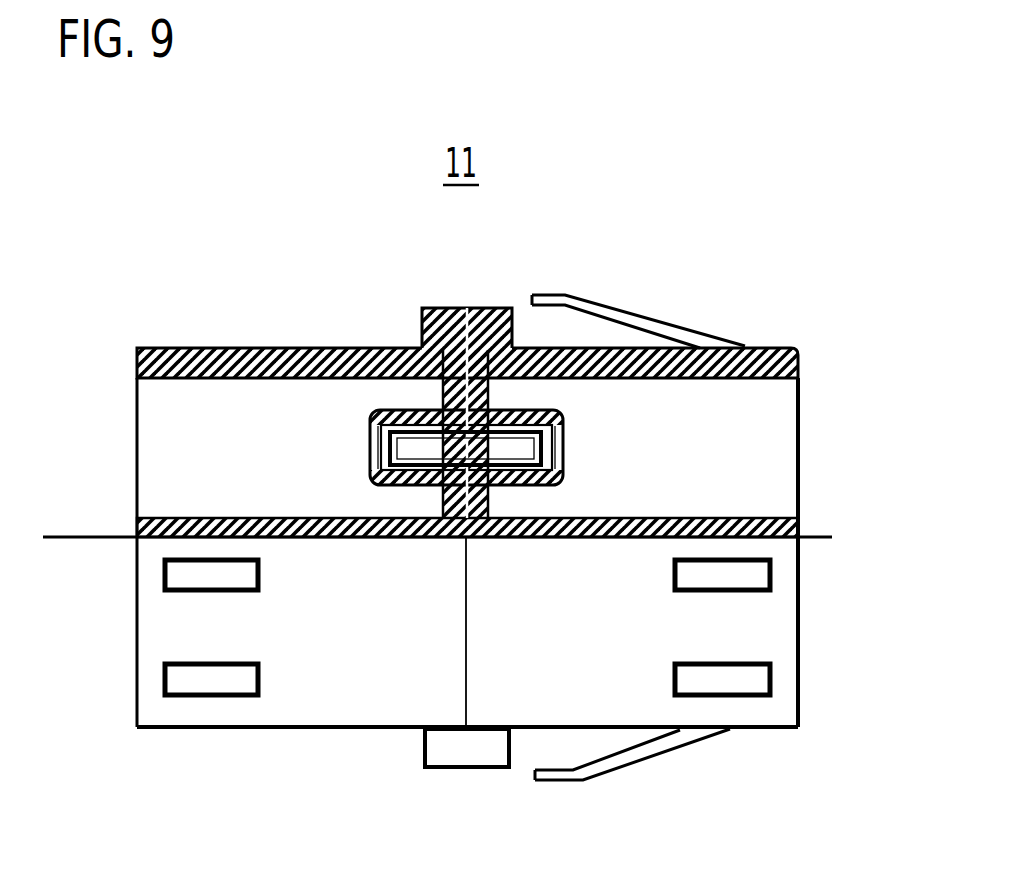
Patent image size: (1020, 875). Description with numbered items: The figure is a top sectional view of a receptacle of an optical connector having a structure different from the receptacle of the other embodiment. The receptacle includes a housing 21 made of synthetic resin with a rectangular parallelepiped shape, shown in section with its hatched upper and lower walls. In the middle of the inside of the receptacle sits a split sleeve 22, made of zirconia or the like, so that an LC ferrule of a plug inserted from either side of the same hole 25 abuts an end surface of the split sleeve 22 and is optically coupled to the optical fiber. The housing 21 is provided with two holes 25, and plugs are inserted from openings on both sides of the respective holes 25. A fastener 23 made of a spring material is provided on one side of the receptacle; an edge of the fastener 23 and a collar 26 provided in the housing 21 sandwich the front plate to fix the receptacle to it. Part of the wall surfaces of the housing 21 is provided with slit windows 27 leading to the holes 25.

The housing 21 is at (777, 347).
The split sleeve 22 is at (407, 442).
The fastener 23 is at (595, 310).
The hole 25 is at (775, 437).
The collar 26 is at (480, 308).
The slit window 27 is at (195, 682).